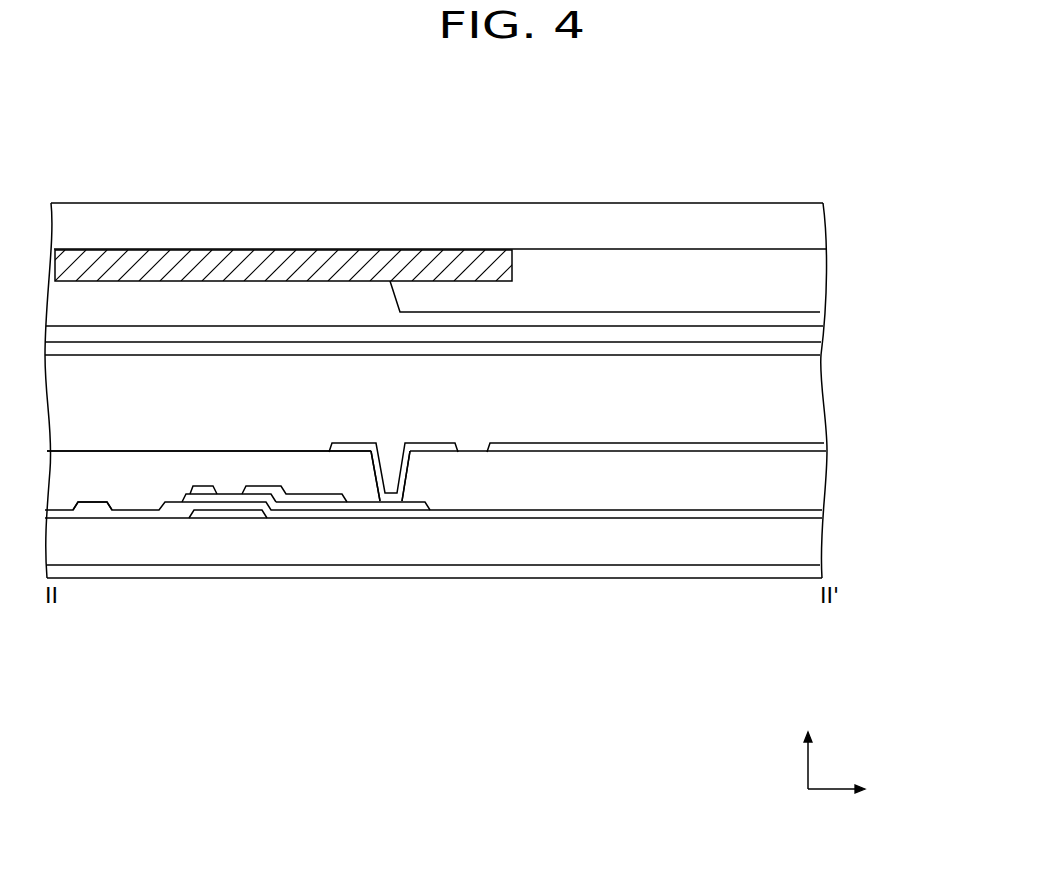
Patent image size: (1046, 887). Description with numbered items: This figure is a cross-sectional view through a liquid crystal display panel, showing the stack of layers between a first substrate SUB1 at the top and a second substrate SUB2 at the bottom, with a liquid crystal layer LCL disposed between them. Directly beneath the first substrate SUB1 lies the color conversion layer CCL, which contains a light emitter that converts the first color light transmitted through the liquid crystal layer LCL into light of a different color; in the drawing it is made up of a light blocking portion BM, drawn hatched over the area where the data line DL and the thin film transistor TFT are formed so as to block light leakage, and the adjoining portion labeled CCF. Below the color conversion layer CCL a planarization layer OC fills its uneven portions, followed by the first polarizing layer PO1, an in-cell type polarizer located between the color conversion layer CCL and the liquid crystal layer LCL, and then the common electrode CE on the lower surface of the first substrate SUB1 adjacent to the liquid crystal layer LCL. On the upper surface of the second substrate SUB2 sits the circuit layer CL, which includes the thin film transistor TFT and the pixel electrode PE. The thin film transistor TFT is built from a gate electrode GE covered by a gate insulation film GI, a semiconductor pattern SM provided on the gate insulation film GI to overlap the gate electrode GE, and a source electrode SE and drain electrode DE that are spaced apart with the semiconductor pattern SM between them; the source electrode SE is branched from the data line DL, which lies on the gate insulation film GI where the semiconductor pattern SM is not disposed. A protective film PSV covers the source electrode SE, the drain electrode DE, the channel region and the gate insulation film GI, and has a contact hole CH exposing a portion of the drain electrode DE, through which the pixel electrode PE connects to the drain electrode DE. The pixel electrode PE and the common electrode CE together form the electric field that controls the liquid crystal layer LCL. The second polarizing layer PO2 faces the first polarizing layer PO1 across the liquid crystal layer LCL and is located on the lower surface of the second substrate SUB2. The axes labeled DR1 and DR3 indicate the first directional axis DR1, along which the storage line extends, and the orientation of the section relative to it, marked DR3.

The first substrate SUB1 is at (813, 225).
The color conversion layer CCL is at (427, 208).
The light blocking portion BM is at (276, 262).
The color filter CCF is at (605, 229).
The planarization layer OC is at (813, 319).
The first polarizing layer PO1 is at (813, 333).
The common electrode CE is at (813, 348).
The liquid crystal layer LCL is at (818, 402).
The circuit layer CL is at (502, 452).
The pixel electrode PE is at (616, 438).
The protective film PSV is at (812, 478).
The contact hole CH is at (398, 473).
The gate insulation film GI is at (817, 512).
The data line DL is at (92, 507).
The thin film transistor TFT is at (306, 588).
The source electrode SE is at (203, 495).
The gate electrode GE is at (230, 514).
The drain electrode DE is at (258, 495).
The semiconductor pattern SM is at (295, 505).
The second substrate SUB2 is at (812, 540).
The second polarizing layer PO2 is at (812, 572).
The third direction DR3 is at (809, 749).
The first directional axis DR1 is at (856, 790).